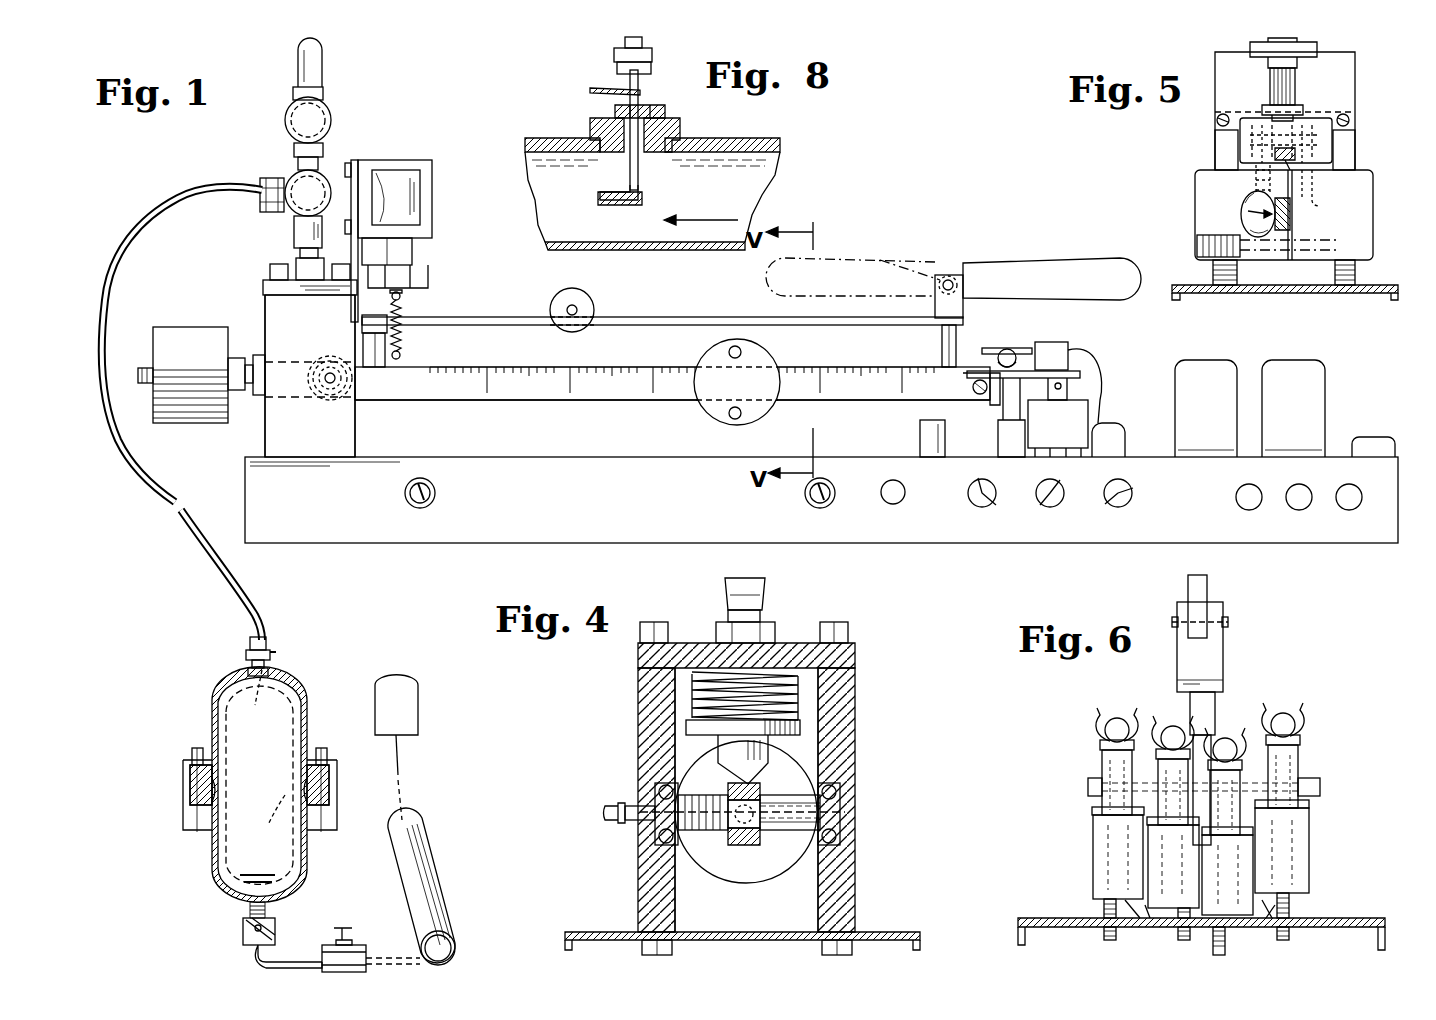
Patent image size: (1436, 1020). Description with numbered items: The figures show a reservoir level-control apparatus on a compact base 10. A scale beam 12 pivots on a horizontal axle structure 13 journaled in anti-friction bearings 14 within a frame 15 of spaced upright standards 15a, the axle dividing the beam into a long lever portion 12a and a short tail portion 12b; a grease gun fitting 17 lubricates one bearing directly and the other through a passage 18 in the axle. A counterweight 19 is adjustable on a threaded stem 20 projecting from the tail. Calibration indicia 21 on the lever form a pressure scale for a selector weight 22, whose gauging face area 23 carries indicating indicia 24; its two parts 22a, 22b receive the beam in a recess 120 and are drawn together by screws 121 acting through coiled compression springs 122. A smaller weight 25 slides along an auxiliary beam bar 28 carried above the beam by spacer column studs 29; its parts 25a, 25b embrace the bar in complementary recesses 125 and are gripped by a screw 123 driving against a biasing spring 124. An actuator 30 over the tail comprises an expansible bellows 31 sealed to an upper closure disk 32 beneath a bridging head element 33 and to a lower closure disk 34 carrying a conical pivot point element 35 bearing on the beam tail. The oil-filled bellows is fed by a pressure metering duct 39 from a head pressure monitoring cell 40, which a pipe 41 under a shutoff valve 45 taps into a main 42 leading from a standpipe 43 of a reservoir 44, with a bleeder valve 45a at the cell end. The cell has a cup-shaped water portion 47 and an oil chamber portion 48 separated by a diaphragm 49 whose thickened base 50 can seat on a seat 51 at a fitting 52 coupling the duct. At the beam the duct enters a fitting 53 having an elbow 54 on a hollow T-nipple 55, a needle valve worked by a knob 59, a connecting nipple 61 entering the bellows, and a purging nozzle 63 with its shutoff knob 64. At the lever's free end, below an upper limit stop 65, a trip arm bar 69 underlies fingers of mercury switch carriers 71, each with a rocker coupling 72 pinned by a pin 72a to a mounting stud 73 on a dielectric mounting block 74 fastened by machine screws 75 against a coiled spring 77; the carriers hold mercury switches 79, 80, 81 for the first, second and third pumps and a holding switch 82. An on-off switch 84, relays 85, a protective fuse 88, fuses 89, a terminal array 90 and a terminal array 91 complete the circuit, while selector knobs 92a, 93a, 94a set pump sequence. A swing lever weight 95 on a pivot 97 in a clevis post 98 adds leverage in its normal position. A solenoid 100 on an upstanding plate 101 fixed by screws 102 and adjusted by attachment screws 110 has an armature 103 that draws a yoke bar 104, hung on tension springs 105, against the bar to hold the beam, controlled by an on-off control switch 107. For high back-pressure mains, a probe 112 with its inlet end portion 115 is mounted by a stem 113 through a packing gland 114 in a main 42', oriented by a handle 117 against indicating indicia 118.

In FIG. 1, the base 10 is at (585, 543).
In FIG. 5, the base 10 is at (1372, 295).
In FIG. 4, the base 10 is at (610, 932).
In FIG. 6, the base 10 is at (1372, 918).
In FIG. 1, the scale beam 12 is at (552, 398).
In FIG. 4, the scale beam 12 is at (748, 846).
In FIG. 1, the lever portion 12a is at (452, 392).
In FIG. 5, the lever portion 12a is at (1312, 216).
In FIG. 1, the tail portion 12b is at (302, 398).
In FIG. 1, the axle structure 13 is at (343, 401).
In FIG. 4, the axle structure 13 is at (788, 856).
In FIG. 4, the anti-friction bearings 14 is at (838, 790).
In FIG. 1, the frame 15 is at (262, 330).
In FIG. 5, the frame 15 is at (1362, 272).
In FIG. 4, the frame 15 is at (632, 699).
In FIG. 1, the upright standards 15a is at (325, 331).
In FIG. 4, the upright standards 15a is at (640, 730).
In FIG. 4, the grease gun fitting 17 is at (608, 846).
In FIG. 4, the passage 18 is at (797, 800).
In FIG. 1, the counterweight 19 is at (205, 415).
In FIG. 4, the counterweight 19 is at (720, 866).
In FIG. 1, the threaded stem 20 is at (144, 368).
In FIG. 1, the calibration indicia 21 is at (640, 367).
In FIG. 1, the selector weight 22 is at (770, 358).
In FIG. 5, the selector weight 22 is at (1206, 178).
In FIG. 5, the weight portion 22a is at (1206, 218).
In FIG. 5, the weight portion 22b is at (1370, 203).
In FIG. 5, the gauging face area 23 is at (1240, 226).
In FIG. 5, the indicating indicia 24 is at (1240, 210).
In FIG. 1, the smaller weight 25 is at (590, 302).
In FIG. 5, the smaller weight 25 is at (1316, 120).
In FIG. 5, the weight part 25a is at (1232, 148).
In FIG. 5, the weight part 25b is at (1334, 160).
In FIG. 1, the auxiliary beam bar 28 is at (490, 317).
In FIG. 5, the auxiliary beam bar 28 is at (1300, 140).
In FIG. 1, the spacer column studs 29 is at (380, 372).
In FIG. 4, the actuator 30 is at (798, 697).
In FIG. 4, the expansible bellows 31 is at (690, 680).
In FIG. 4, the closure disk 32 is at (786, 640).
In FIG. 1, the bridging head element 33 is at (265, 288).
In FIG. 4, the bridging head element 33 is at (690, 640).
In FIG. 4, the closure disk 34 is at (802, 728).
In FIG. 4, the pivot point element 35 is at (738, 780).
In FIG. 1, the pressure metering duct 39 is at (124, 232).
In FIG. 1, the head pressure monitoring cell 40 is at (212, 733).
In FIG. 1, the pipe 41 is at (292, 958).
In FIG. 8, the pipe 41 is at (642, 56).
In FIG. 1, the main 42 is at (432, 886).
In FIG. 8, the main 42' is at (652, 182).
In FIG. 1, the standpipe 43 is at (400, 770).
In FIG. 1, the reservoir 44 is at (420, 712).
In FIG. 1, the shutoff valve 45 is at (340, 933).
In FIG. 1, the bleeder valve 45a is at (243, 926).
In FIG. 1, the cup-shaped portion 47 is at (303, 888).
In FIG. 1, the oil chamber portion 48 is at (298, 688).
In FIG. 1, the pressure transmitting diaphragm 49 is at (298, 824).
In FIG. 1, the thickened base 50 is at (263, 880).
In FIG. 1, the seat 51 is at (248, 670).
In FIG. 1, the fitting 52 is at (268, 657).
In FIG. 1, the fitting 53 is at (284, 226).
In FIG. 1, the elbow 54 is at (262, 190).
In FIG. 1, the T-nipple 55 is at (320, 153).
In FIG. 4, the T-nipple 55 is at (758, 581).
In FIG. 1, the knob 59 is at (300, 180).
In FIG. 4, the connecting nipple 61 is at (766, 608).
In FIG. 1, the filler and air bleed nozzle 63 is at (298, 48).
In FIG. 1, the operating knob 64 is at (300, 118).
In FIG. 1, the switch plate 65 is at (1005, 348).
In FIG. 1, the trip arm bar 69 is at (985, 398).
In FIG. 1, the mercury switch carriers 71 is at (1062, 345).
In FIG. 6, the mercury switch carriers 71 is at (1100, 752).
In FIG. 6, the rocker coupling 72 is at (1100, 806).
In FIG. 6, the pin 72a is at (1088, 783).
In FIG. 6, the mounting stud 73 is at (1102, 798).
In FIG. 1, the dielectric mounting block 74 is at (1085, 408).
In FIG. 6, the dielectric mounting block 74 is at (1093, 872).
In FIG. 6, the machine screws 75 is at (1103, 935).
In FIG. 6, the coiled spring 77 is at (1165, 926).
In FIG. 1, the mercury switch 79 is at (1018, 355).
In FIG. 6, the mercury switch 79 is at (1115, 719).
In FIG. 6, the mercury switch 80 is at (1172, 727).
In FIG. 6, the mercury switch 81 is at (1229, 738).
In FIG. 6, the holding switch 82 is at (1284, 713).
In FIG. 1, the on-off switch 84 is at (808, 501).
In FIG. 1, the relays 85 is at (1282, 365).
In FIG. 1, the protective fuse 88 is at (886, 503).
In FIG. 1, the fuses 89 is at (1345, 508).
In FIG. 1, the terminal array 90 is at (1125, 440).
In FIG. 1, the electrical terminal array 91 is at (1378, 437).
In FIG. 1, the knob 92a is at (968, 496).
In FIG. 1, the knob 93a is at (1040, 505).
In FIG. 1, the knob 94a is at (1120, 505).
In FIG. 1, the lever 95 is at (890, 262).
In FIG. 6, the lever 95 is at (1208, 583).
In FIG. 1, the pivot 97 is at (948, 280).
In FIG. 6, the pivot 97 is at (1228, 622).
In FIG. 1, the clevis post 98 is at (935, 307).
In FIG. 6, the clevis post 98 is at (1215, 662).
In FIG. 1, the solenoid 100 is at (423, 203).
In FIG. 5, the solenoid 100 is at (1320, 44).
In FIG. 1, the upstanding plate 101 is at (358, 270).
In FIG. 5, the upstanding plate 101 is at (1226, 52).
In FIG. 5, the screws 102 is at (1206, 116).
In FIG. 1, the armature 103 is at (413, 250).
In FIG. 5, the armature 103 is at (1300, 77).
In FIG. 1, the yoke bar 104 is at (401, 354).
In FIG. 5, the yoke bar 104 is at (1318, 204).
In FIG. 1, the tension springs 105 is at (404, 316).
In FIG. 5, the tension springs 105 is at (1248, 184).
In FIG. 1, the on-off control switch 107 is at (433, 496).
In FIG. 1, the attachment screws 110 is at (372, 225).
In FIG. 8, the probe 112 is at (647, 202).
In FIG. 8, the stem 113 is at (640, 174).
In FIG. 8, the packing gland 114 is at (654, 126).
In FIG. 8, the foot 115 is at (598, 196).
In FIG. 8, the handle 117 is at (590, 92).
In FIG. 8, the indicating indicia 118 is at (590, 120).
In FIG. 5, the recess 120 is at (1292, 218).
In FIG. 5, the screws 121 is at (1207, 258).
In FIG. 5, the coiled compression springs 122 is at (1284, 272).
In FIG. 5, the screw 123 is at (1255, 112).
In FIG. 5, the coiled compression biasing spring 124 is at (1303, 112).
In FIG. 5, the complementary recesses 125 is at (1300, 166).